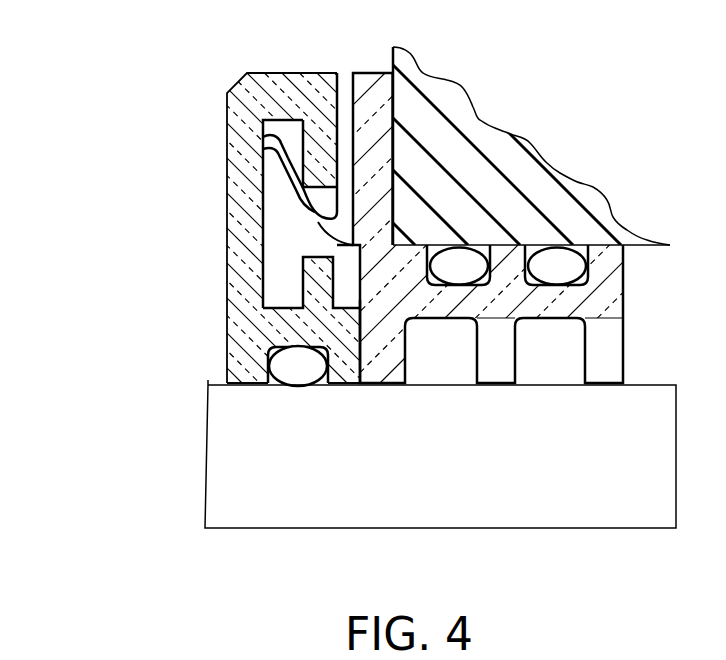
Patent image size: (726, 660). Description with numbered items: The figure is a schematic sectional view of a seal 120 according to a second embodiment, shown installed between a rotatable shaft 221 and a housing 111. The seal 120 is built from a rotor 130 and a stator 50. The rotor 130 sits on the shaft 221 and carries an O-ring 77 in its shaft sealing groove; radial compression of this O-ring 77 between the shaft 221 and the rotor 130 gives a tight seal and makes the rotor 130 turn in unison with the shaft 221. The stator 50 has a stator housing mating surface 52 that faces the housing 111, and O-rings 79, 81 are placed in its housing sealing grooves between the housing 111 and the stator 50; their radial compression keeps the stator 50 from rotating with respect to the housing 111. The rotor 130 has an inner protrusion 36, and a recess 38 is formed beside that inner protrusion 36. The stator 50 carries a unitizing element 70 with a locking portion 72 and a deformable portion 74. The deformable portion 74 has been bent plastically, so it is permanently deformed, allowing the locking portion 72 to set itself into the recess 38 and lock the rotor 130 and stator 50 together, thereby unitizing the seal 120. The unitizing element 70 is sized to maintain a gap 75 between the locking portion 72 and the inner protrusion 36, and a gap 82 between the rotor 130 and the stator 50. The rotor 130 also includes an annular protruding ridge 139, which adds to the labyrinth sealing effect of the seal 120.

The seal 120 is at (112, 71).
The rotor 130 is at (243, 93).
The recess 38 is at (276, 135).
The inner protrusion 36 is at (322, 150).
The gap 75 is at (282, 147).
The locking portion 72 is at (277, 178).
The unitizing element 70 is at (293, 207).
The deformable portion 74 is at (320, 225).
The annular protruding ridge 139 is at (312, 278).
The O-ring 77 is at (300, 368).
The stator 50 is at (376, 95).
The stator housing mating surface 52 is at (391, 138).
The O-ring 79 is at (460, 275).
The O-ring 81 is at (557, 275).
The housing 111 is at (552, 176).
The gap 82 is at (362, 384).
The rotatable shaft 221 is at (622, 507).